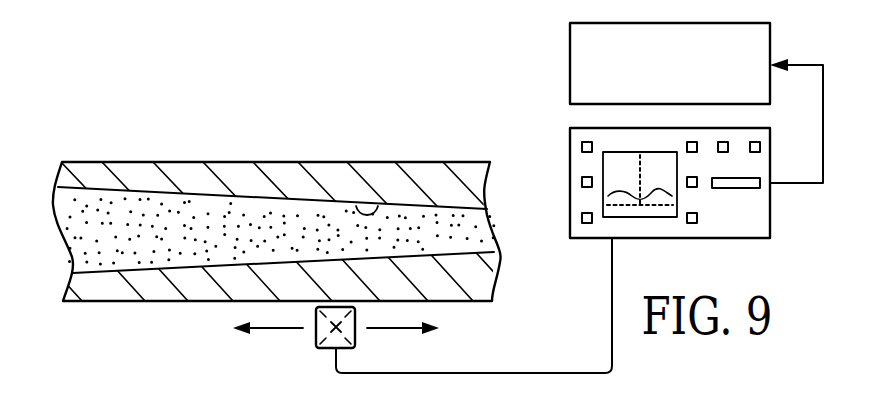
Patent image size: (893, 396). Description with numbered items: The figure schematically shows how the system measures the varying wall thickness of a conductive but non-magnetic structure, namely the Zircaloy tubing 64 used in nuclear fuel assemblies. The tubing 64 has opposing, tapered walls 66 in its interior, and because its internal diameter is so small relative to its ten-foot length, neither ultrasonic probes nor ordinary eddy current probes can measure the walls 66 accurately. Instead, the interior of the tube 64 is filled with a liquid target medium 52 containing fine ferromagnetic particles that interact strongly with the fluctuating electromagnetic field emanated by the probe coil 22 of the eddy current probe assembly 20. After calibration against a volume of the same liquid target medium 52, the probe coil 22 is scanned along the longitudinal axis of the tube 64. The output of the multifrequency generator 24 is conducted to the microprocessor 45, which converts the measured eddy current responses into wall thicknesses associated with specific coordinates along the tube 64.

The tubing 64 is at (175, 150).
The liquid target medium 52 is at (226, 234).
The tapered walls 66 is at (383, 256).
The probe coil 22 is at (314, 341).
The eddy current probe assembly 20 is at (662, 168).
The multifrequency generator 24 is at (713, 227).
The microprocessor 45 is at (570, 70).